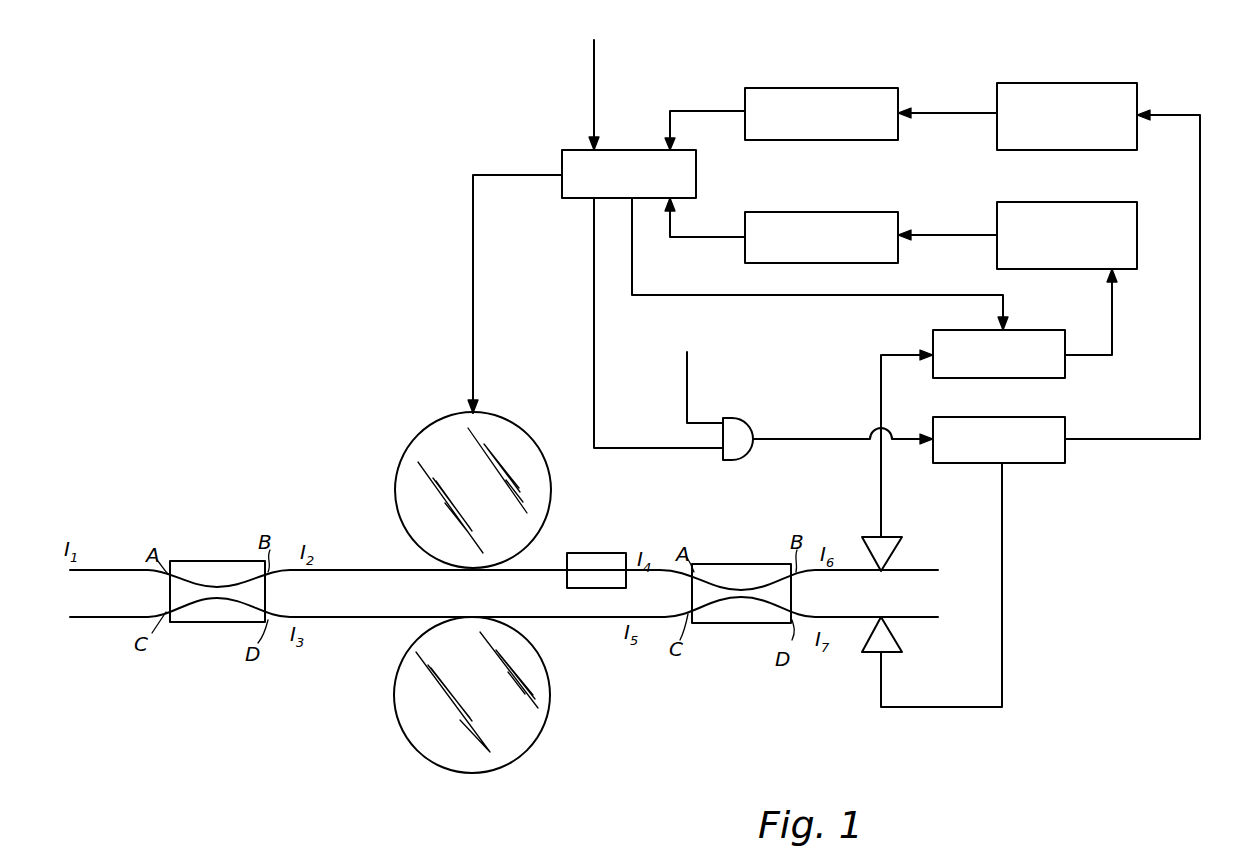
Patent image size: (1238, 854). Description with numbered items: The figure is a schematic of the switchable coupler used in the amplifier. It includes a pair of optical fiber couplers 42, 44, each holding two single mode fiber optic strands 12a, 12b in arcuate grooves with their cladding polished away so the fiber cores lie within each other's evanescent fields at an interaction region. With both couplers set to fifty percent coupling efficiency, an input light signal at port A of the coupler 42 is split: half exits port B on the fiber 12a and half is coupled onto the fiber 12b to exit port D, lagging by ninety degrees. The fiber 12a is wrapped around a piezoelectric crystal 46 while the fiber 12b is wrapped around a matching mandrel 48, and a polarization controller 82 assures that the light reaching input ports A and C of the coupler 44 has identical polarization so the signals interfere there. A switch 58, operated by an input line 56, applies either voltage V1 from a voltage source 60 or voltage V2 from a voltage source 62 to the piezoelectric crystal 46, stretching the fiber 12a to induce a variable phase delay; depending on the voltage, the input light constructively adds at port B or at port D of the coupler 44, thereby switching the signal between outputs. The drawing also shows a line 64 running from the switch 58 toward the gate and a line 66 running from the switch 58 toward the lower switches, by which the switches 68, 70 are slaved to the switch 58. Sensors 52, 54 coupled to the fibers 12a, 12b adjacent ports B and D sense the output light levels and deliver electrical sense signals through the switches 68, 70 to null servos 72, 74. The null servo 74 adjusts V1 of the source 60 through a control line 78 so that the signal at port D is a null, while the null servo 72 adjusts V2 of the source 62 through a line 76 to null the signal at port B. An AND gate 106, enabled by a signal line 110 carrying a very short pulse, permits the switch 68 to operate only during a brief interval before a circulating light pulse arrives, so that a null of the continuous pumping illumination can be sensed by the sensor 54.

The fiber optic strand 12a is at (370, 569).
The fiber optic strand 12b is at (357, 618).
The optical fiber coupler 42 is at (212, 561).
The optical fiber coupler 44 is at (750, 564).
The piezoelectric crystal 46 is at (415, 438).
The matching mandrel 48 is at (464, 758).
The sensor 52 is at (899, 552).
The sensor 54 is at (903, 648).
The input line 56 is at (594, 74).
The switch 58 is at (578, 197).
The voltage source 60 is at (810, 88).
The voltage source 62 is at (825, 212).
The control line 64 is at (593, 360).
The control line 66 is at (766, 296).
The switch 68 is at (1050, 463).
The switch 70 is at (1055, 378).
The null servo 72 is at (1137, 216).
The null servo 74 is at (1100, 83).
The control line 76 is at (952, 234).
The control line 78 is at (948, 112).
The polarization controller 82 is at (593, 553).
The AND gate 106 is at (746, 418).
The signal line 110 is at (690, 378).